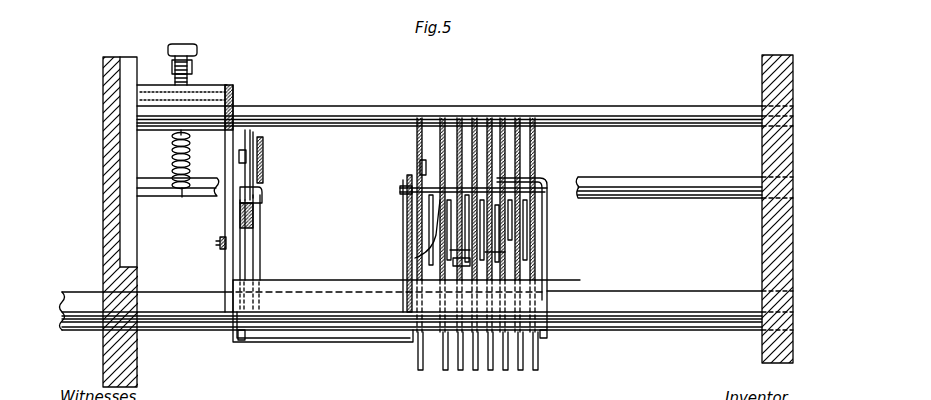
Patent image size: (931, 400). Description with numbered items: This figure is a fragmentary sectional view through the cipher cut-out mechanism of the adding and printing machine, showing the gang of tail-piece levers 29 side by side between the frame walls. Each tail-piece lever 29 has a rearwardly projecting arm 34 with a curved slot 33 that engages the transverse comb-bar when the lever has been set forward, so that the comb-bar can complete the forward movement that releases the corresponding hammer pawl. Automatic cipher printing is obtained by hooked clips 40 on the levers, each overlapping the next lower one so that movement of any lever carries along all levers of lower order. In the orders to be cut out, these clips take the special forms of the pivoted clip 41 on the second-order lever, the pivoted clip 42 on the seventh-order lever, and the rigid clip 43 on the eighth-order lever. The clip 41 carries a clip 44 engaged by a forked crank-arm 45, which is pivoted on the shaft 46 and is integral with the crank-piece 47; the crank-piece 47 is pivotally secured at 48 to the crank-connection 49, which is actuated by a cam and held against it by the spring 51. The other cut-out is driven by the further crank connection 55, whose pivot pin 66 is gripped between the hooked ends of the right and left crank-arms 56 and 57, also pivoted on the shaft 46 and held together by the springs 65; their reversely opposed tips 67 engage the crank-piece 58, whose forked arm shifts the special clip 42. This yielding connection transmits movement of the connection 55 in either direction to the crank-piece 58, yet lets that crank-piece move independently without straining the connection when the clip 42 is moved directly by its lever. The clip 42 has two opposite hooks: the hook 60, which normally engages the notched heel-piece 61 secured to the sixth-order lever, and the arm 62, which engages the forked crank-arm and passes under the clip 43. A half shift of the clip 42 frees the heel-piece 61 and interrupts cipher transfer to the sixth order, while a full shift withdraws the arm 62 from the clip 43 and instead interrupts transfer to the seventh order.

The tail-piece levers 29 is at (540, 185).
The curved slot 33 is at (437, 143).
The arm 34 is at (460, 119).
The hooked clips 40 is at (510, 262).
The special hooked clip 41 is at (528, 223).
The special hooked clip 42 is at (415, 258).
The special hooked clip 43 is at (419, 164).
The clip 44 is at (521, 171).
The forked crank-arm 45 is at (548, 198).
The shaft 46 is at (213, 331).
The crank-piece 47 is at (236, 265).
The pivot 48 is at (219, 243).
The crank-connection 49 is at (228, 85).
The spring 51 is at (172, 153).
The crank connection 55 is at (264, 160).
The crank-arm 56 is at (260, 227).
The crank-arm 57 is at (252, 250).
The crank-piece 58 is at (245, 342).
The hook 60 is at (444, 118).
The notched heel-piece 61 is at (453, 262).
The arm 62 is at (406, 203).
The springs 65 is at (238, 208).
The pivot pin 66 is at (243, 150).
The tips 67 is at (253, 343).